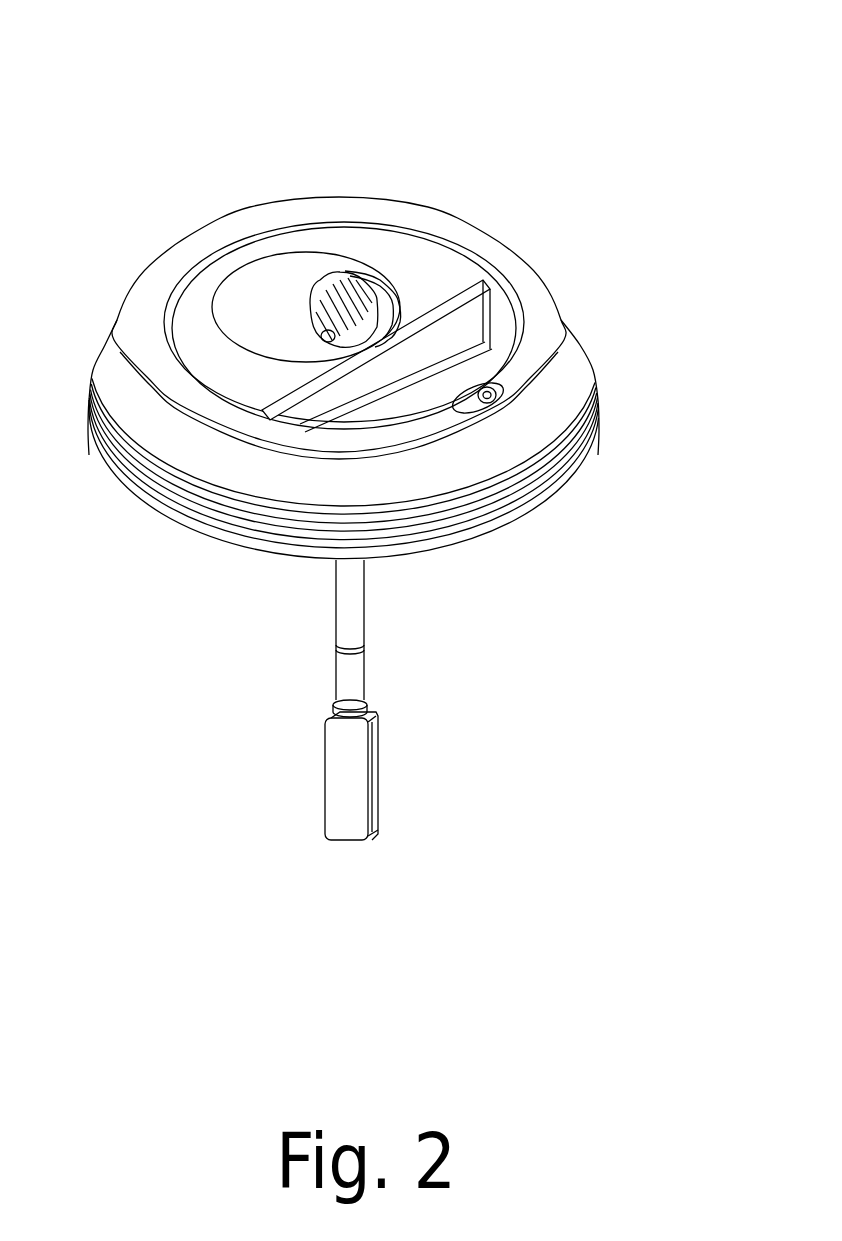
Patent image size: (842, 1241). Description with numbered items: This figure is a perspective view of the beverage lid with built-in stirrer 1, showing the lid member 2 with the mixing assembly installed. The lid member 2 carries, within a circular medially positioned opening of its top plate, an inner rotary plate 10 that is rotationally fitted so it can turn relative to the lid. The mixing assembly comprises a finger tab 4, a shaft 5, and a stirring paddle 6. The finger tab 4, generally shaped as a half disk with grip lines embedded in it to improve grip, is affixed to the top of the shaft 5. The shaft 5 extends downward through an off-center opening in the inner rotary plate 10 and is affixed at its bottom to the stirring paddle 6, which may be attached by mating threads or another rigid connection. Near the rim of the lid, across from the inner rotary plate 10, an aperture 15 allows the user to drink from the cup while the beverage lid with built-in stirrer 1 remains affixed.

The beverage lid with built-in stirrer 1 is at (119, 119).
The lid member 2 is at (88, 365).
The finger tab 4 is at (362, 275).
The shaft 5 is at (333, 604).
The stirring paddle 6 is at (345, 771).
The inner rotary plate 10 is at (283, 283).
The aperture 15 is at (497, 364).